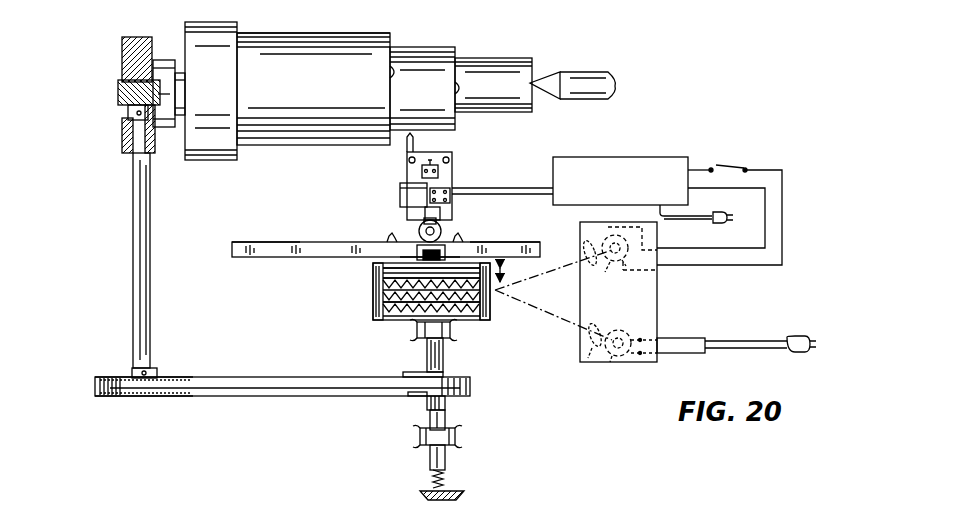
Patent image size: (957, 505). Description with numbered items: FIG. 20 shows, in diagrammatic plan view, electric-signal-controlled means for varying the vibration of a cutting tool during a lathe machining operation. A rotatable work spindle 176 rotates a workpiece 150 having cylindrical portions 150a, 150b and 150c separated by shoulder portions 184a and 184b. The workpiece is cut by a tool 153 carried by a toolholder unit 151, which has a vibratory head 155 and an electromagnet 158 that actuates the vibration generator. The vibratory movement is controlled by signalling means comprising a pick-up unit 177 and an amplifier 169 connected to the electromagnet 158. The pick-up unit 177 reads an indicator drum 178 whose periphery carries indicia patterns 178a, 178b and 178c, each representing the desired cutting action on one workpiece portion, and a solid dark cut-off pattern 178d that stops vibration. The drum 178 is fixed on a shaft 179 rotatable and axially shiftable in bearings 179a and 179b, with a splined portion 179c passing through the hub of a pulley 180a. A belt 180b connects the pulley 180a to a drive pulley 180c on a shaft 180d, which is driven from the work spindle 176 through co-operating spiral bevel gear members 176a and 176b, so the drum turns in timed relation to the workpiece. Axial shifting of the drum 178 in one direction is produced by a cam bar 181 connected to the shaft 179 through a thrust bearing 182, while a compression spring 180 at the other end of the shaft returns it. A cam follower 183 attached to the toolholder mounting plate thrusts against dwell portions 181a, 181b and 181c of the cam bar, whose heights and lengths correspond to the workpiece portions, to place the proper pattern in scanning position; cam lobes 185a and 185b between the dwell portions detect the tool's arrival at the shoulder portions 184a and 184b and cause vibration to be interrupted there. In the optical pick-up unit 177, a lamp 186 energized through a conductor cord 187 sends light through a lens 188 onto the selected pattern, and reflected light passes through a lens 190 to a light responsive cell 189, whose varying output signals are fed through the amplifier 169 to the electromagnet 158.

The workpiece 150 is at (276, 33).
The workpiece portion 150a is at (495, 58).
The workpiece portion 150b is at (432, 47).
The workpiece portion 150c is at (322, 33).
The toolholder unit 151 is at (455, 165).
The tool 153 is at (414, 137).
The vibratory head 155 is at (458, 173).
The electromagnet 158 is at (401, 193).
The amplifier 169 is at (653, 157).
The work spindle 176 is at (222, 22).
The spiral bevel gear member 176a is at (122, 40).
The spiral bevel gear member 176b is at (118, 93).
The pick-up unit 177 is at (660, 291).
The indicator drum 178 is at (376, 320).
The indicia pattern 178a is at (490, 318).
The indicia pattern 178b is at (373, 298).
The indicia pattern 178c is at (373, 281).
The indicia pattern 178d is at (373, 268).
The shaft 179 is at (420, 326).
The bearing 179a is at (450, 336).
The bearing 179b is at (456, 434).
The splined portion 179c is at (447, 398).
The compression spring 180 is at (444, 477).
The pulley 180a is at (408, 395).
The belt 180b is at (258, 377).
The drive pulley 180c is at (167, 377).
The shaft 180d is at (140, 272).
The cam bar 181 is at (232, 246).
The dwell portion 181a is at (507, 242).
The dwell portion 181b is at (412, 238).
The dwell portion 181c is at (255, 242).
The thrust bearing 182 is at (417, 250).
The cam follower 183 is at (442, 232).
The shoulder portion 184a is at (458, 88).
The shoulder portion 184b is at (392, 72).
The cam lobe 185a is at (462, 237).
The cam lobe 185b is at (391, 234).
The lamp 186 is at (622, 356).
The conductor cord 187 is at (745, 349).
The lens 188 is at (592, 363).
The light responsive cell 189 is at (613, 268).
The lens 190 is at (586, 252).